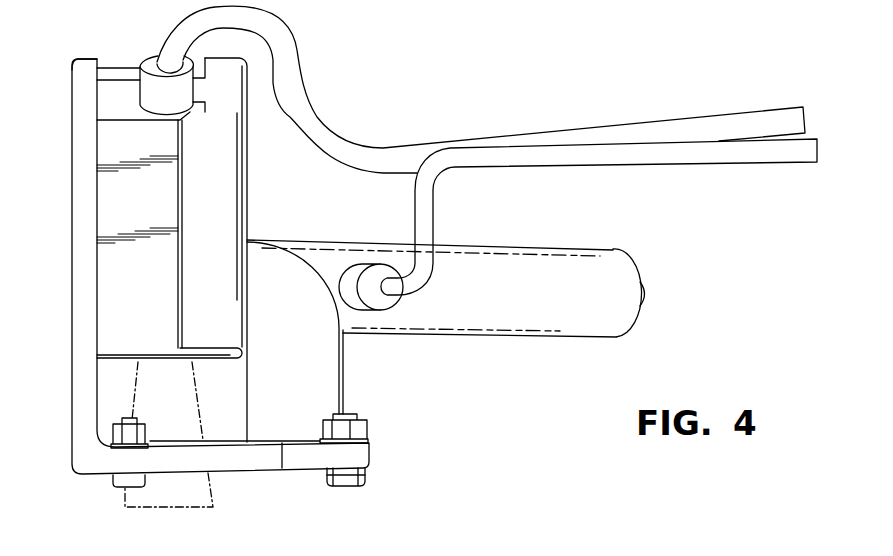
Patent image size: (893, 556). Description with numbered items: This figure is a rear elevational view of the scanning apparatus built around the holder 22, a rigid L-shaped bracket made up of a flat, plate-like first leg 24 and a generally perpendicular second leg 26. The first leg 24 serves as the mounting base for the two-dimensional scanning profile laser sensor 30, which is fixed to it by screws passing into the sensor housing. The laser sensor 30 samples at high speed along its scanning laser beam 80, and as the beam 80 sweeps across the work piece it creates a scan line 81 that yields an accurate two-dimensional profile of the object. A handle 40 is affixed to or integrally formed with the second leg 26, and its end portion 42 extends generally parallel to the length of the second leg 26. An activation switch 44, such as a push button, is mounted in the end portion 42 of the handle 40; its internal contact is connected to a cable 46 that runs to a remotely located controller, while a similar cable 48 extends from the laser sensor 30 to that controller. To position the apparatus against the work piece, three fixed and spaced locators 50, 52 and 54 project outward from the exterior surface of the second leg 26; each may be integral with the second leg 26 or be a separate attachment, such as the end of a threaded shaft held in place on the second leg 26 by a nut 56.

The holder 22 is at (66, 99).
The first leg 24 is at (68, 83).
The second leg 26 is at (220, 443).
The laser sensor 30 is at (136, 134).
The handle 40 is at (508, 320).
The end portion 42 is at (340, 362).
The activation switch 44 is at (644, 297).
The cable 46 is at (752, 163).
The cable 48 is at (720, 116).
The locator 50 is at (338, 487).
The locator 52 is at (360, 482).
The locator 54 is at (110, 480).
The nut 56 is at (128, 422).
The scanning laser beam 80 is at (155, 395).
The scan line 81 is at (165, 508).